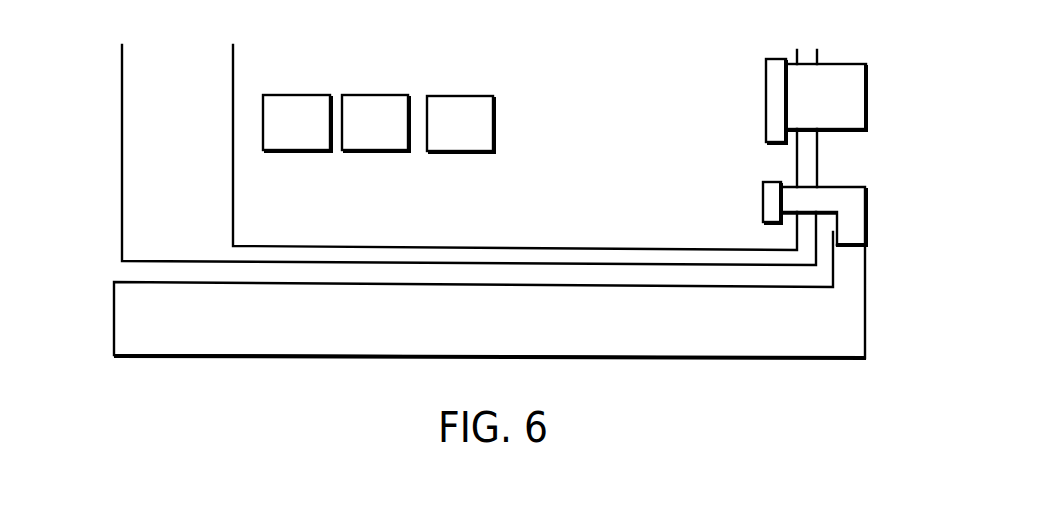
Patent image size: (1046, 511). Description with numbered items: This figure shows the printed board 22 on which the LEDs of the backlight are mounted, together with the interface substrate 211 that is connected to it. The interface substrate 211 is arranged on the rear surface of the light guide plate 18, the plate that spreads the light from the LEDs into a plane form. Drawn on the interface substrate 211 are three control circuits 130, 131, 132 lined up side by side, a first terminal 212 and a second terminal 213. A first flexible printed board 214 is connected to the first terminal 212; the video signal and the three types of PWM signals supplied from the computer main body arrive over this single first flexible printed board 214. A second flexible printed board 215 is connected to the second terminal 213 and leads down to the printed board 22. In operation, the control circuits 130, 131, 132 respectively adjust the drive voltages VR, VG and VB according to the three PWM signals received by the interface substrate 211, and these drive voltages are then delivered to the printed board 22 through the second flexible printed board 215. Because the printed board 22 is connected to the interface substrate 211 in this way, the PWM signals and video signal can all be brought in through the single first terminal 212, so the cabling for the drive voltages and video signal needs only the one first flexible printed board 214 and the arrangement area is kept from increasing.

The light guide plate 18 is at (122, 157).
The interface substrate 211 is at (233, 157).
The printed board 22 is at (865, 331).
The control circuit 130 is at (290, 151).
The control circuit 131 is at (368, 151).
The control circuit 132 is at (453, 152).
The first terminal 212 is at (766, 108).
The second terminal 213 is at (763, 200).
The first flexible printed board 214 is at (857, 97).
The second flexible printed board 215 is at (862, 200).